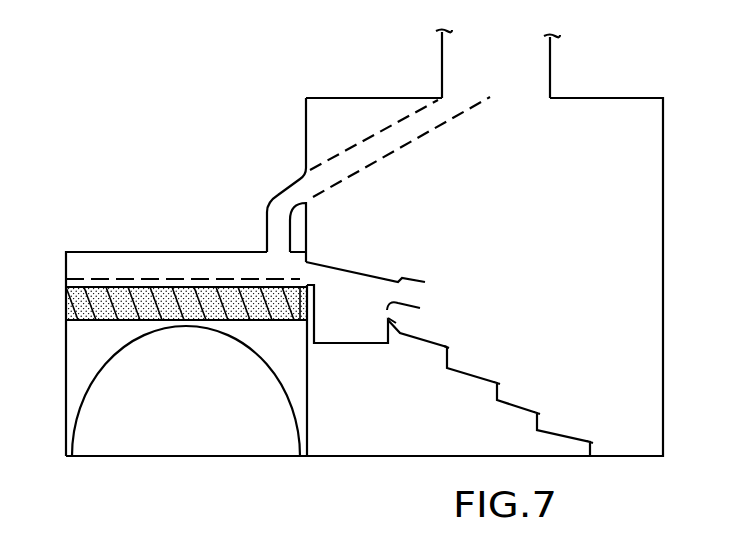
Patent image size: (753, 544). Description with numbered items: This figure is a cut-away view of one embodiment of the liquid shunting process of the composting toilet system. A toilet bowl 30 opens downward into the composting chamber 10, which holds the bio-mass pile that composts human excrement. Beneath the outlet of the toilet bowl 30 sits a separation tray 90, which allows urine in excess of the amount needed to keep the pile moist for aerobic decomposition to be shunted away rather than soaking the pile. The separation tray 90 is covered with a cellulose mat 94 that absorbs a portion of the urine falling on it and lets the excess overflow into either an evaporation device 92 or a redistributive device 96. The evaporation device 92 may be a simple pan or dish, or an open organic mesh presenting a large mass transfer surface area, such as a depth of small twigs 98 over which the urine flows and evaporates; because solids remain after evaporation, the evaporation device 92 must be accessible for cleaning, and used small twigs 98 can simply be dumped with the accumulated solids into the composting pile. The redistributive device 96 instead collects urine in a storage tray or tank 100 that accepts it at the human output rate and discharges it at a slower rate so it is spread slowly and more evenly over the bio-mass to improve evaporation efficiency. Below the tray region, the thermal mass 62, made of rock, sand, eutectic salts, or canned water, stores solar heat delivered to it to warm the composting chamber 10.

The composting chamber 10 is at (517, 185).
The toilet bowl 30 is at (413, 146).
The thermal mass 62 is at (186, 391).
The separation tray 90 is at (200, 265).
The evaporation device 92 is at (105, 320).
The cellulose mat 94 is at (102, 280).
The redistributive device 96 is at (378, 285).
The small twigs 98 is at (277, 320).
The storage tray or tank 100 is at (377, 316).